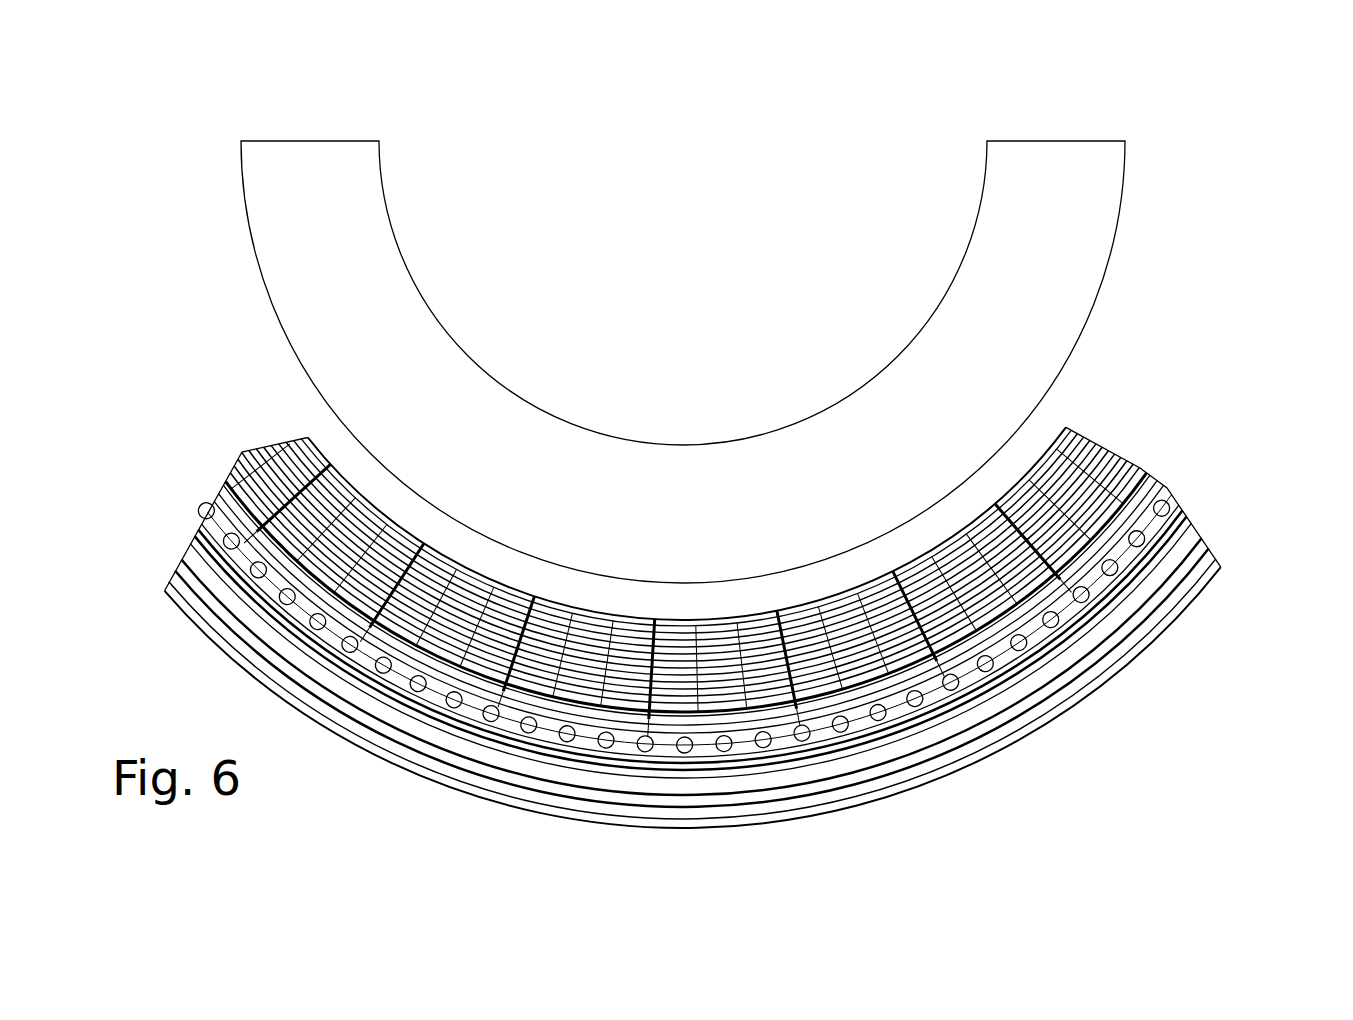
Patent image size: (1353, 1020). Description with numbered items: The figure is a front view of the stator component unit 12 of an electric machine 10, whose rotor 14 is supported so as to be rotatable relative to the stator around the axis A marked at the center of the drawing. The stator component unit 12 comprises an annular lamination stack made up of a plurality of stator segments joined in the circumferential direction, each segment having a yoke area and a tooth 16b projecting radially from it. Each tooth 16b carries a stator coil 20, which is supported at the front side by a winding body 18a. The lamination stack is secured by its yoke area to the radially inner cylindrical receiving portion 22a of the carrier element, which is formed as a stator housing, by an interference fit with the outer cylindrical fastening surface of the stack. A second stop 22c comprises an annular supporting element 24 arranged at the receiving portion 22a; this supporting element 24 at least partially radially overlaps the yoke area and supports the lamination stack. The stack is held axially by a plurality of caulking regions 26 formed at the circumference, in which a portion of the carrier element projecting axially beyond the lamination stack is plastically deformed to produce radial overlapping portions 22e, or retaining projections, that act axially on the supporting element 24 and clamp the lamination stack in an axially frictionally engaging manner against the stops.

The electric machine 10 is at (937, 113).
The stator component unit 12 is at (1215, 453).
The rotor 14 is at (783, 524).
The tooth 16b is at (477, 560).
The winding body 18a is at (228, 482).
The stator coil 20 is at (267, 447).
The receiving portion 22a is at (1212, 560).
The second stop 22c is at (1193, 488).
The radial overlapping portion 22e is at (207, 612).
The annular supporting element 24 is at (213, 493).
The caulking region 26 is at (270, 590).